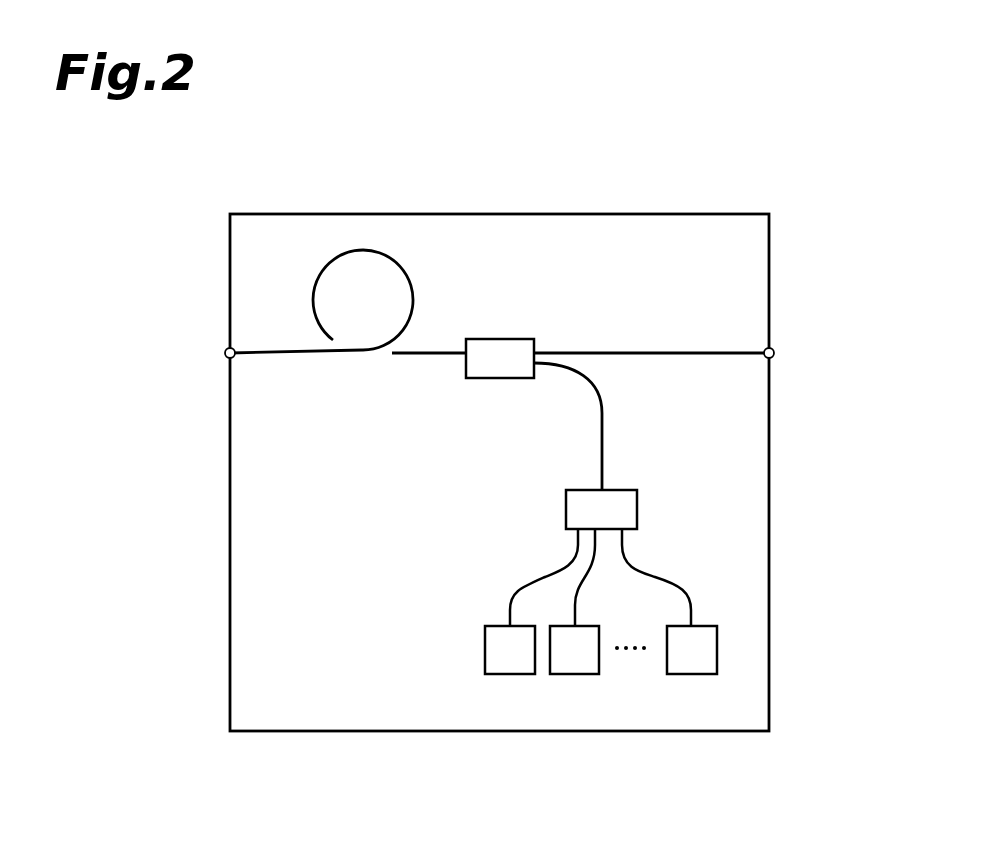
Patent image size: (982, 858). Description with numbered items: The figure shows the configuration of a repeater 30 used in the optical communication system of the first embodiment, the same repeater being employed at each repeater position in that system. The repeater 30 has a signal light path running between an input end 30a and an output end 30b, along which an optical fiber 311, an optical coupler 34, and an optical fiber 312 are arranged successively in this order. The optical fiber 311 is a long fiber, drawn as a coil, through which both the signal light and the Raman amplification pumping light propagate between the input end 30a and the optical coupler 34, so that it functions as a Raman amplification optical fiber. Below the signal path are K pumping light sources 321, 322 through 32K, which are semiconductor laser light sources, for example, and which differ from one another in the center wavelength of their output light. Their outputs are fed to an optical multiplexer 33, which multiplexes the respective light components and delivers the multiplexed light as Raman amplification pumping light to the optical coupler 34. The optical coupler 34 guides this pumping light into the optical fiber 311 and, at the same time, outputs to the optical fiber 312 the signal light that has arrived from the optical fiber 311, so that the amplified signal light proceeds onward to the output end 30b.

The repeater 30 is at (520, 212).
The input end 30a is at (224, 354).
The output end 30b is at (775, 354).
The optical fiber 311 is at (410, 277).
The optical fiber 312 is at (648, 349).
The pumping light source 321 is at (508, 674).
The pumping light source 322 is at (585, 674).
The pumping light source 32K is at (700, 674).
The optical multiplexer 33 is at (566, 505).
The optical coupler 34 is at (510, 380).